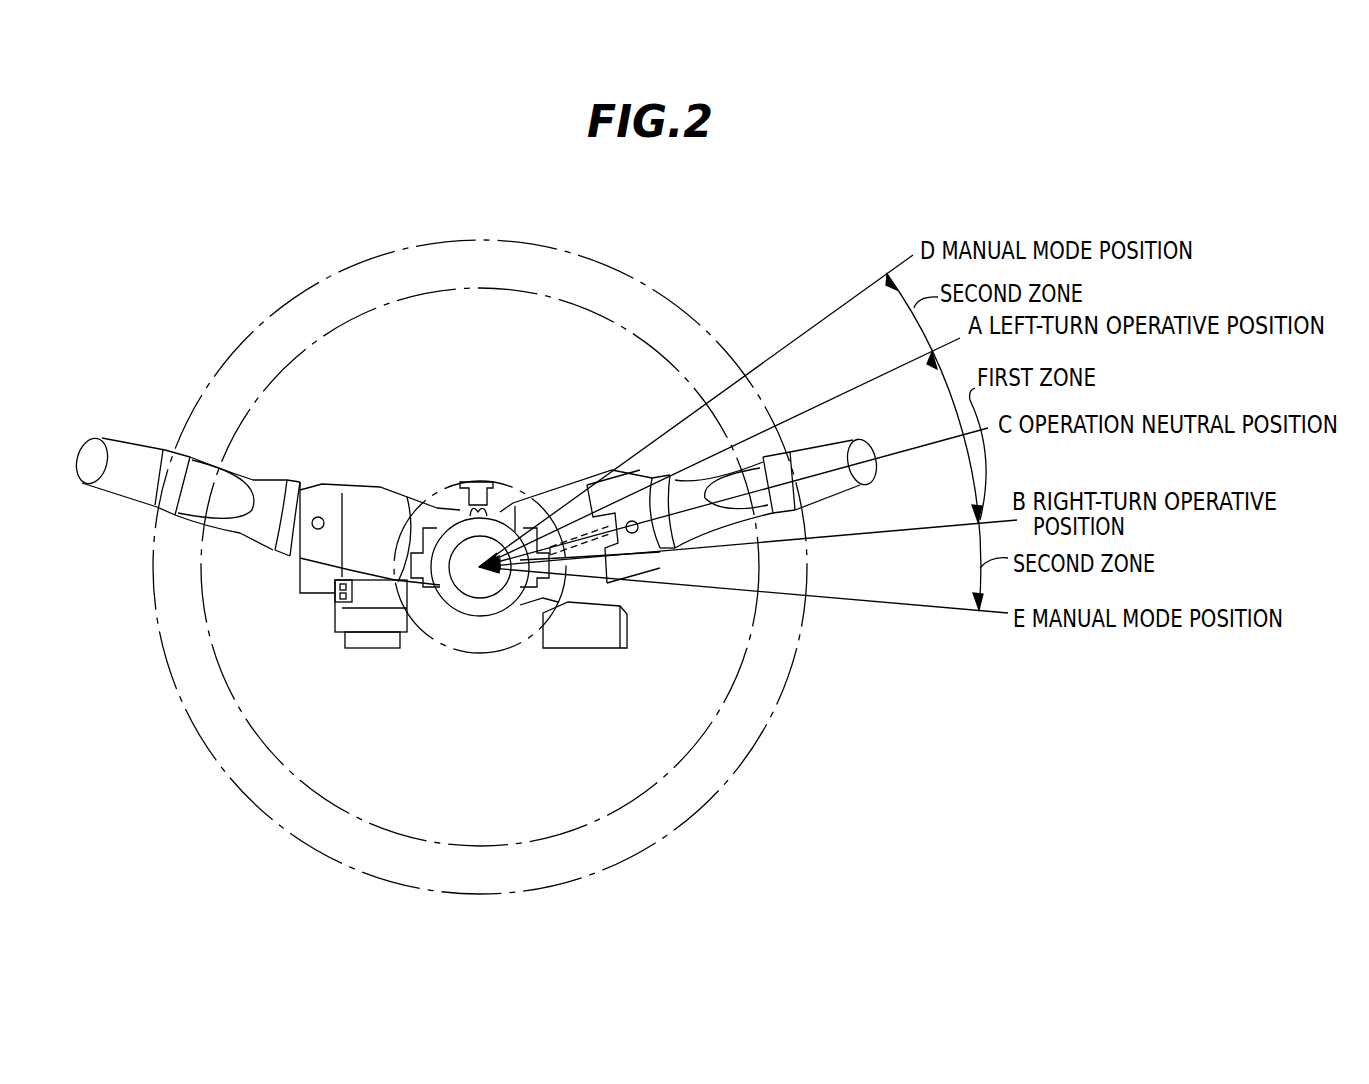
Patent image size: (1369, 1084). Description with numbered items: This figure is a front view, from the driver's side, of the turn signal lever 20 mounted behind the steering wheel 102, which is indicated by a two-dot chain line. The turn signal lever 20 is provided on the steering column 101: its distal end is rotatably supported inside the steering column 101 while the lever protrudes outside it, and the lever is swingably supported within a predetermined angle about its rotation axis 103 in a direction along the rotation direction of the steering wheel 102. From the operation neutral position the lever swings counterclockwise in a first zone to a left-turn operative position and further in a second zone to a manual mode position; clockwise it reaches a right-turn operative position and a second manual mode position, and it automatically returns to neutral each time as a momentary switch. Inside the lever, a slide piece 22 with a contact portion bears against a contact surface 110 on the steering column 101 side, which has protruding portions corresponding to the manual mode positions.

The turn signal lever 20 is at (784, 532).
The slide piece 22 is at (571, 537).
The steering column 101 is at (457, 652).
The steering wheel 102 is at (685, 815).
The rotation axis 103 is at (632, 508).
The contact surface 110 is at (598, 582).